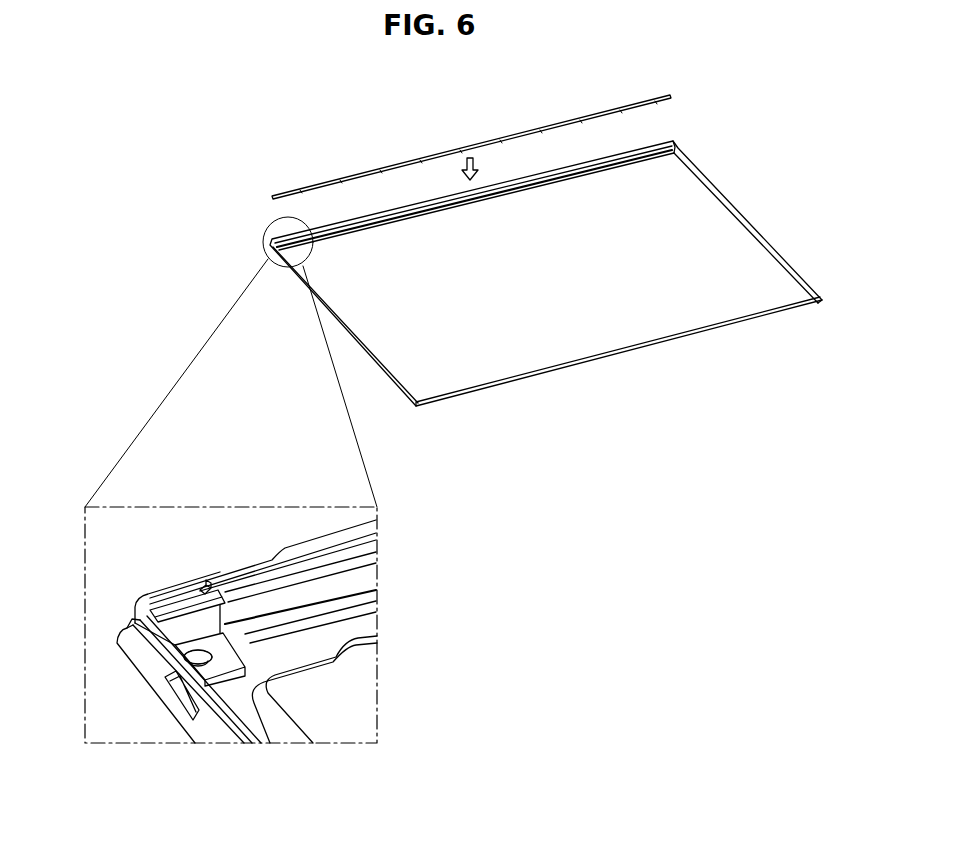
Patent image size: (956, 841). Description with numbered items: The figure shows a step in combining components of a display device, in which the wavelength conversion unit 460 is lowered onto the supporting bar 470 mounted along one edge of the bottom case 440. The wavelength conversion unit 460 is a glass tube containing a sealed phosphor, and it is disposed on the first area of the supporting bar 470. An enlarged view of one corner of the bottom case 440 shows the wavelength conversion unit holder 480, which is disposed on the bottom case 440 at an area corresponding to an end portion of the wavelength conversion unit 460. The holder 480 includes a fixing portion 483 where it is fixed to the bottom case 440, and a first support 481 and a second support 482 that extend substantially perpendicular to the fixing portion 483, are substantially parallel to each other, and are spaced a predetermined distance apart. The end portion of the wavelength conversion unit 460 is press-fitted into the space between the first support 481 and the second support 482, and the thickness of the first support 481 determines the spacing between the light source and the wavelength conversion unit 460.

The bottom case 440 is at (570, 335).
The wavelength conversion unit 460 is at (503, 138).
The supporting bar 470 is at (365, 602).
The wavelength conversion unit holder 480 is at (138, 605).
The first support 481 is at (175, 600).
The second support 482 is at (195, 612).
The fixing portion 483 is at (223, 653).